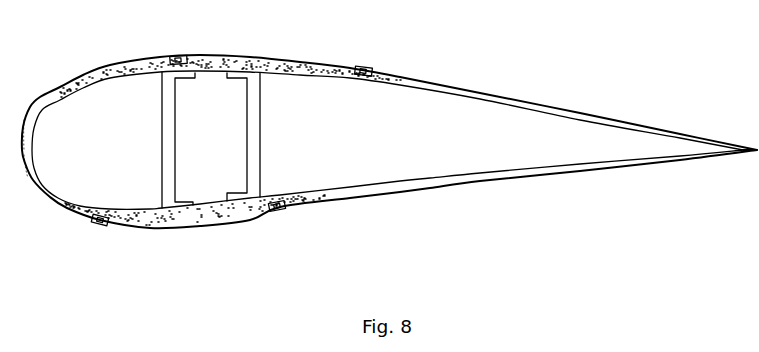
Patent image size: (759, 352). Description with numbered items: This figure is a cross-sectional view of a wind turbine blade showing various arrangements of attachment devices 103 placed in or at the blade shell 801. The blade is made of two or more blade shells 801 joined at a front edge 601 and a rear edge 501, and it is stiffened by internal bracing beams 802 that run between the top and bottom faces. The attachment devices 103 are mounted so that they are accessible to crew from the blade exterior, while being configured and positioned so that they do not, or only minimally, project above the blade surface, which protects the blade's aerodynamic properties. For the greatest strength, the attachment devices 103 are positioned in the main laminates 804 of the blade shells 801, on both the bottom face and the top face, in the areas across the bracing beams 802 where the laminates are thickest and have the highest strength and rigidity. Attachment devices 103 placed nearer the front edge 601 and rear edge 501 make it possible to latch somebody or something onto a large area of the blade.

The attachment device 103 is at (178, 55).
The rear edge 501 is at (737, 142).
The front edge 601 is at (30, 147).
The blade shell 801 is at (437, 82).
The internal bracing beam 802 is at (257, 187).
The main laminate 804 is at (227, 62).